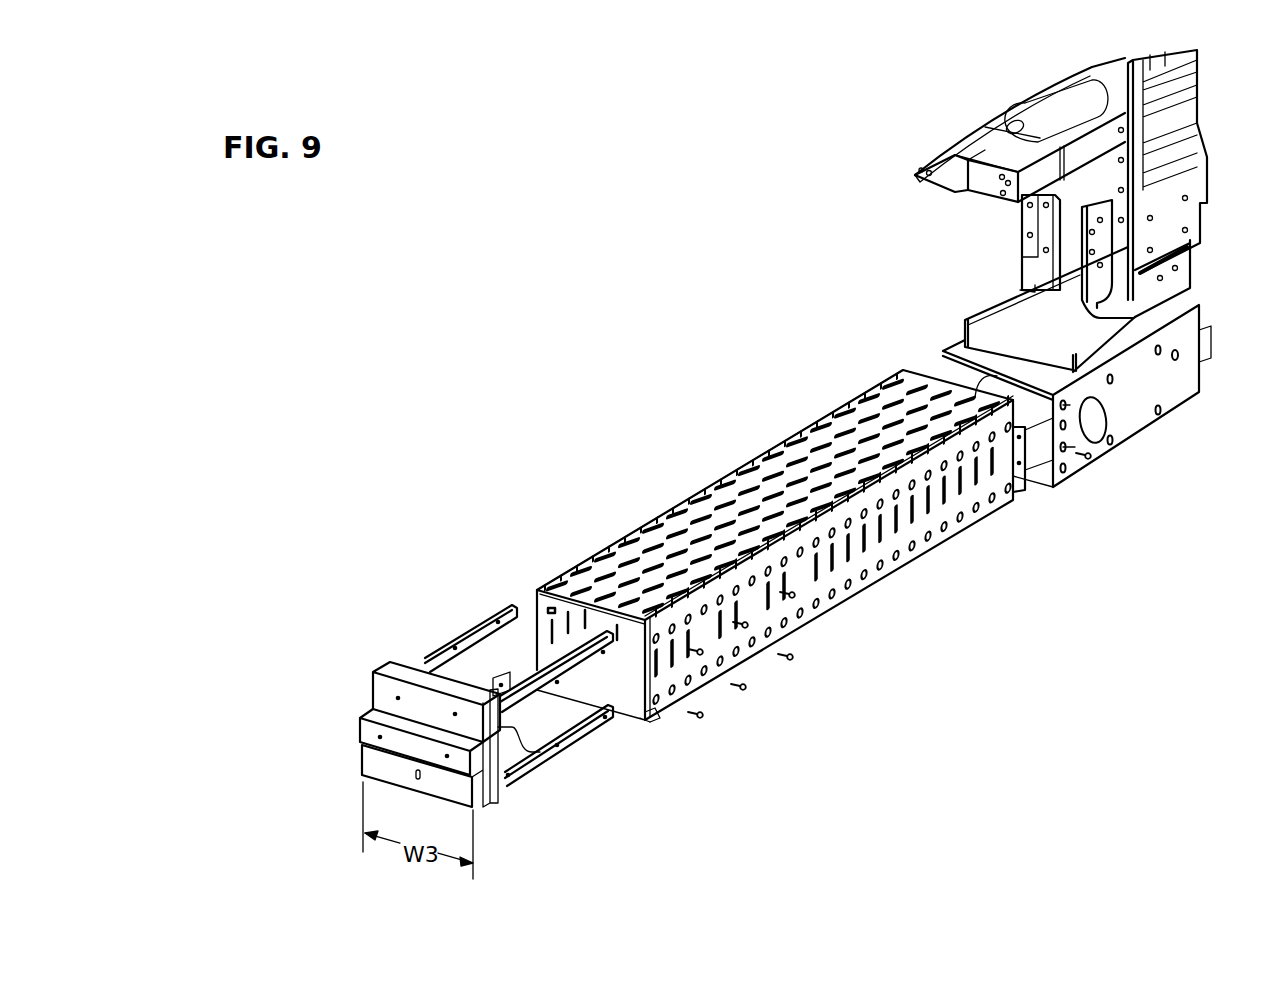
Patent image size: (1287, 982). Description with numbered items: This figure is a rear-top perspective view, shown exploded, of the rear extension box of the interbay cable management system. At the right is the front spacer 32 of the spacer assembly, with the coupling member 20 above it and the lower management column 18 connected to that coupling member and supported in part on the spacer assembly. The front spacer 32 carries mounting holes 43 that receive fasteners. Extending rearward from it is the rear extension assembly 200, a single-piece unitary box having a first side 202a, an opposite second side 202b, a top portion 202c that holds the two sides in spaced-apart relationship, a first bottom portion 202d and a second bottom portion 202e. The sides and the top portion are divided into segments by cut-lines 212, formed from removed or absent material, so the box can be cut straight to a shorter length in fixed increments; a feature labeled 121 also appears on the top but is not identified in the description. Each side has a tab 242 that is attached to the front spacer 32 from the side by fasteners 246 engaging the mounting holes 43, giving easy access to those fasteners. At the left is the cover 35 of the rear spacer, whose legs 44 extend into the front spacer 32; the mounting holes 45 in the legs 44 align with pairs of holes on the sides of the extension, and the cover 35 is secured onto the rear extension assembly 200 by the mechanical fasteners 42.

The lower management column 18 is at (1203, 222).
The coupling member 20 is at (1175, 292).
The front spacer 32 is at (1178, 402).
The fasteners 246 is at (1067, 448).
The mounting holes 43 is at (1067, 470).
The tab 242 is at (1017, 478).
The rear extension assembly 200 is at (620, 470).
The first side 202a is at (863, 563).
The second side 202b is at (720, 483).
The top portion 202c is at (882, 398).
The first bottom portion 202d is at (638, 722).
The second bottom portion 202e is at (620, 652).
The slot 121 is at (673, 573).
The cut-lines 212 is at (637, 563).
The cover 35 is at (375, 670).
The legs 44 is at (475, 625).
The mounting holes 45 is at (553, 683).
The mechanical fasteners 42 is at (702, 716).